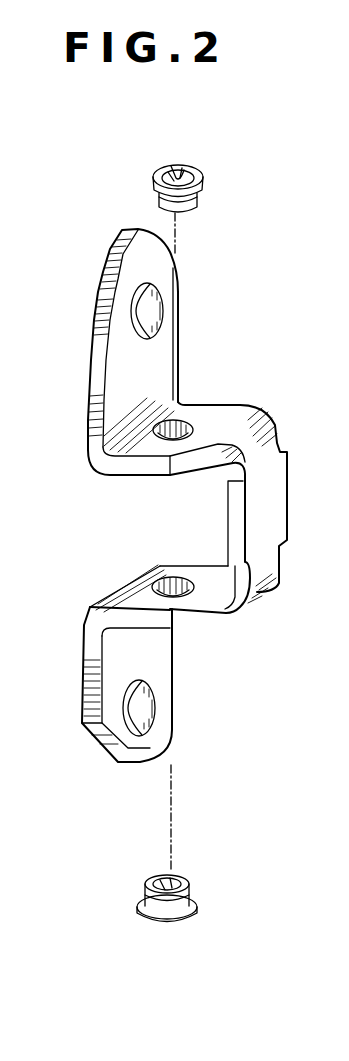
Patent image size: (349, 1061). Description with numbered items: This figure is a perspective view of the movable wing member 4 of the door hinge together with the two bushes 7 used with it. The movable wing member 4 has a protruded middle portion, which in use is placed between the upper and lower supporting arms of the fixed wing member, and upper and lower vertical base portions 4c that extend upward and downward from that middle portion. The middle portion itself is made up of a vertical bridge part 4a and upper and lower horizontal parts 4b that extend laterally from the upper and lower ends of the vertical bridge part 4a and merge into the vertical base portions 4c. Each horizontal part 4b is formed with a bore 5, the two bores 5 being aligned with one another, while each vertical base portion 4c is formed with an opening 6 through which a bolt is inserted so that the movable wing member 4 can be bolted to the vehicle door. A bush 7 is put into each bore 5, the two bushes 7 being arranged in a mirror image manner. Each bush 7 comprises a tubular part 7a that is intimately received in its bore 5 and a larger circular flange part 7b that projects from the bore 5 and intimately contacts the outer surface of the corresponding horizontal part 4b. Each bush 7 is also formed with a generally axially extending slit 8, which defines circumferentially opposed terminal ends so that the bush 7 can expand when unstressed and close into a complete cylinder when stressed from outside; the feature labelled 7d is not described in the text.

The movable wing member 4 is at (181, 507).
The vertical bridge part 4a is at (265, 450).
The horizontal part 4b is at (143, 473).
The vertical base portion 4c is at (88, 375).
The bore 5 is at (176, 416).
The opening 6 is at (132, 294).
The bush 7 is at (167, 535).
The tubular part 7a is at (200, 192).
The larger circular flange part 7b is at (148, 178).
The rivet bore 7d is at (197, 205).
The slit 8 is at (178, 170).